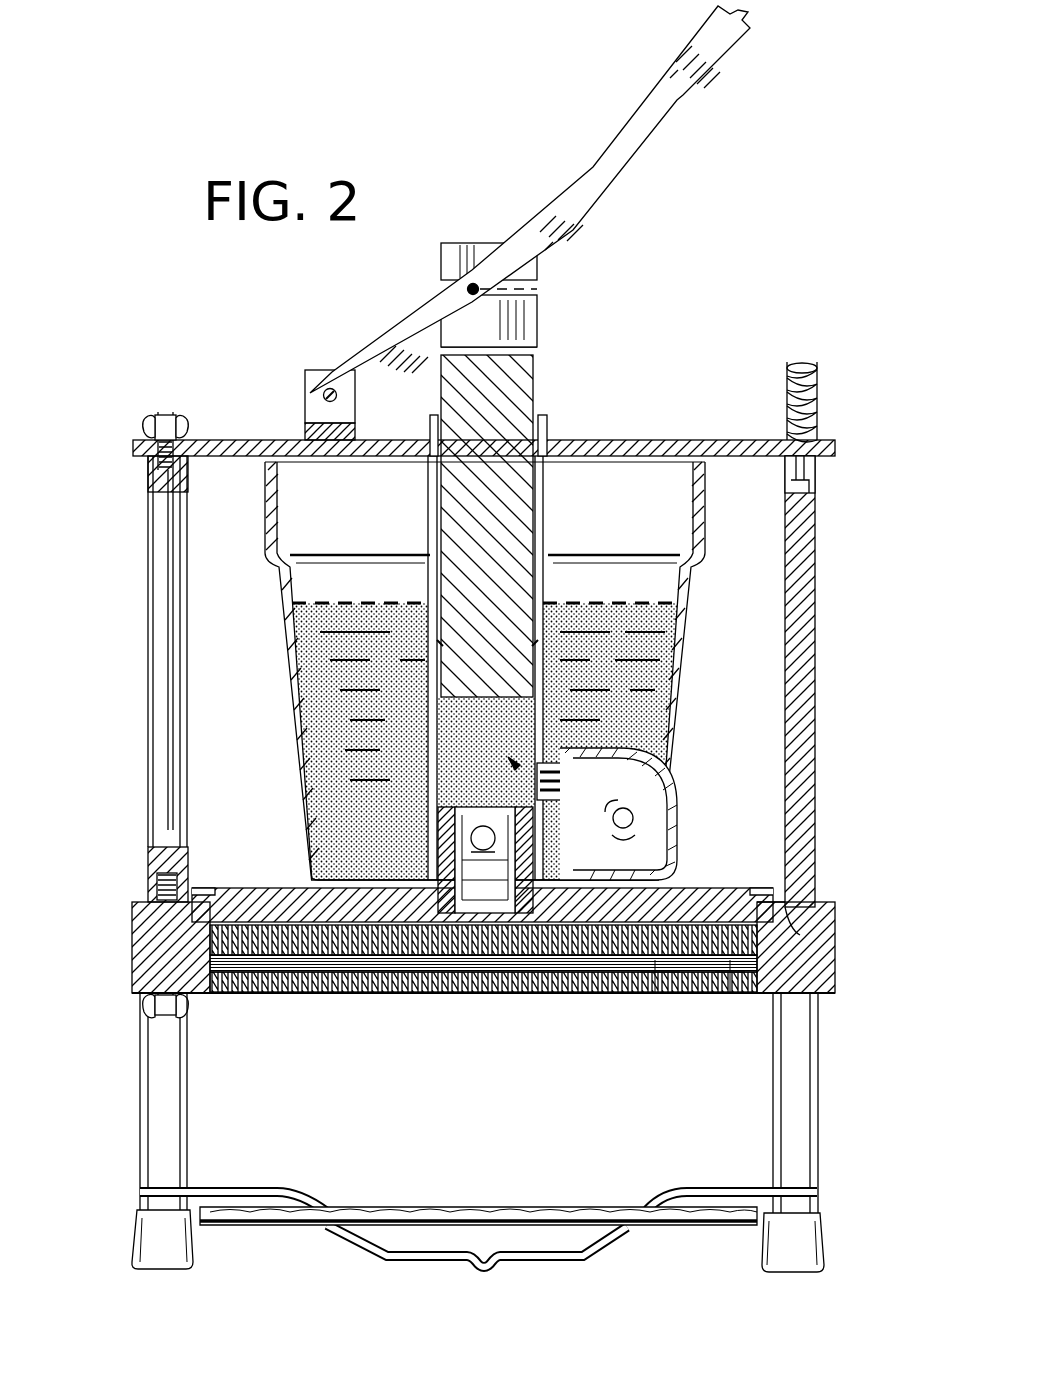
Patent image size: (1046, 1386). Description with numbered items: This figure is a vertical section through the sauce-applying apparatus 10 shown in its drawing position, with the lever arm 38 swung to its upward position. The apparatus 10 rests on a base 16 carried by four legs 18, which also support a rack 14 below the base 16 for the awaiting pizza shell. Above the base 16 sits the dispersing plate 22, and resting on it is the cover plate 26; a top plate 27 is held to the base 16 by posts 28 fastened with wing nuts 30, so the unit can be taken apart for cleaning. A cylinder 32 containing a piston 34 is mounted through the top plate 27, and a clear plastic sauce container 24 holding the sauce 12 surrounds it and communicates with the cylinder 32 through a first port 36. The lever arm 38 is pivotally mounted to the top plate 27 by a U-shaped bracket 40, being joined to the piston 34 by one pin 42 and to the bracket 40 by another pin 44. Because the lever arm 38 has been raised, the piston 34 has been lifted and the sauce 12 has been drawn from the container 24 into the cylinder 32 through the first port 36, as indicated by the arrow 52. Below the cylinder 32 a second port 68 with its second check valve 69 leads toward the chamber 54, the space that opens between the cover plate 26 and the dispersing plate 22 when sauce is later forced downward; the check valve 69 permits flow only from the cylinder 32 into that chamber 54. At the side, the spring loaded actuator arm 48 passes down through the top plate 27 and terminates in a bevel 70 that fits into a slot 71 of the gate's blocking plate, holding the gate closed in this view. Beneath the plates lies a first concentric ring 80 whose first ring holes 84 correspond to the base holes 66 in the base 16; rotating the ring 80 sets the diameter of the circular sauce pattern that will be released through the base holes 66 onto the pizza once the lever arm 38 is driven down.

The apparatus 10 is at (96, 636).
The sauce 12 is at (647, 680).
The rack 14 is at (587, 1260).
The base 16 is at (835, 990).
The legs 18 is at (148, 1098).
The dispersing plate 22 is at (835, 945).
The sauce container 24 is at (600, 790).
The cover plate 26 is at (260, 883).
The top plate 27 is at (683, 440).
The posts 28 is at (168, 538).
The wing nuts 30 is at (190, 432).
The cylinder 32 is at (548, 430).
The piston 34 is at (512, 383).
The first port 36 is at (600, 768).
The lever arm 38 is at (593, 175).
The U-shaped bracket 40 is at (315, 375).
The pin 42 is at (473, 283).
The pin 44 is at (333, 388).
The spring loaded actuator arm 48 is at (815, 548).
The arrow 52 is at (663, 783).
The chamber 54 is at (160, 898).
The base holes 66 is at (385, 990).
The second port 68 is at (445, 860).
The second check valve 69 is at (470, 835).
The bevel 70 is at (800, 935).
The slot 71 is at (835, 968).
The first concentric ring 80 is at (655, 992).
The first ring holes 84 is at (730, 992).